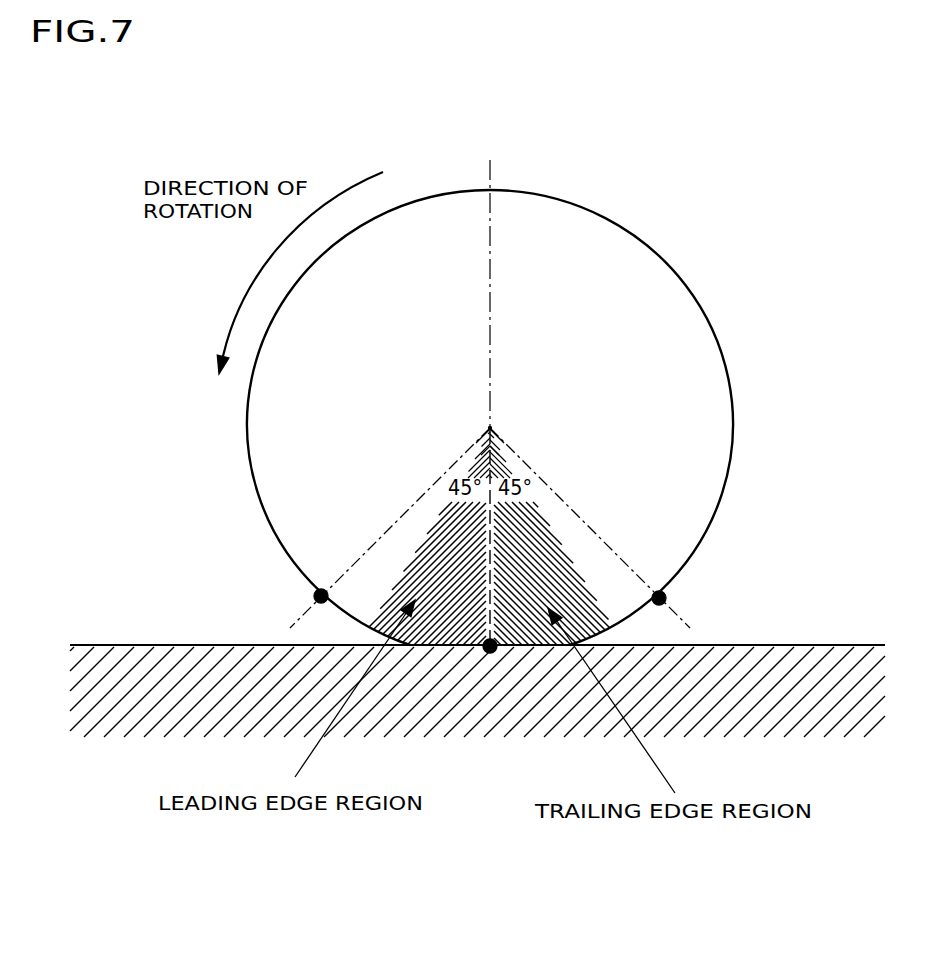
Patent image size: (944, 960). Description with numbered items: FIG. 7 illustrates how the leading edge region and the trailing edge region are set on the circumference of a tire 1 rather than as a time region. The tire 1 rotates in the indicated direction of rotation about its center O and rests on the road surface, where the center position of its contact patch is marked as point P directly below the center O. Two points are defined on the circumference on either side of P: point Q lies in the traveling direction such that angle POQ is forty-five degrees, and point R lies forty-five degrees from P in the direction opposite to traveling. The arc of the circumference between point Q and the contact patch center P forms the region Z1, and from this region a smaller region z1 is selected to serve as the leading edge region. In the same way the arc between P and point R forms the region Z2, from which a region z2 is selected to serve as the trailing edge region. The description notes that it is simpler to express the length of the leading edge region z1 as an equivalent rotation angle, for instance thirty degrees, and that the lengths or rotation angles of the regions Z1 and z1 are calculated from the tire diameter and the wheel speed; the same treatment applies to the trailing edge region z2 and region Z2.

The tire 1 is at (698, 305).
The region Z1 is at (410, 540).
The region Z2 is at (580, 542).
The leading edge region z1 is at (450, 508).
The trailing edge region z2 is at (532, 508).
The center of the tire O is at (507, 417).
The center position of the contact patch P is at (490, 674).
The point Q is at (295, 609).
The point R is at (680, 610).